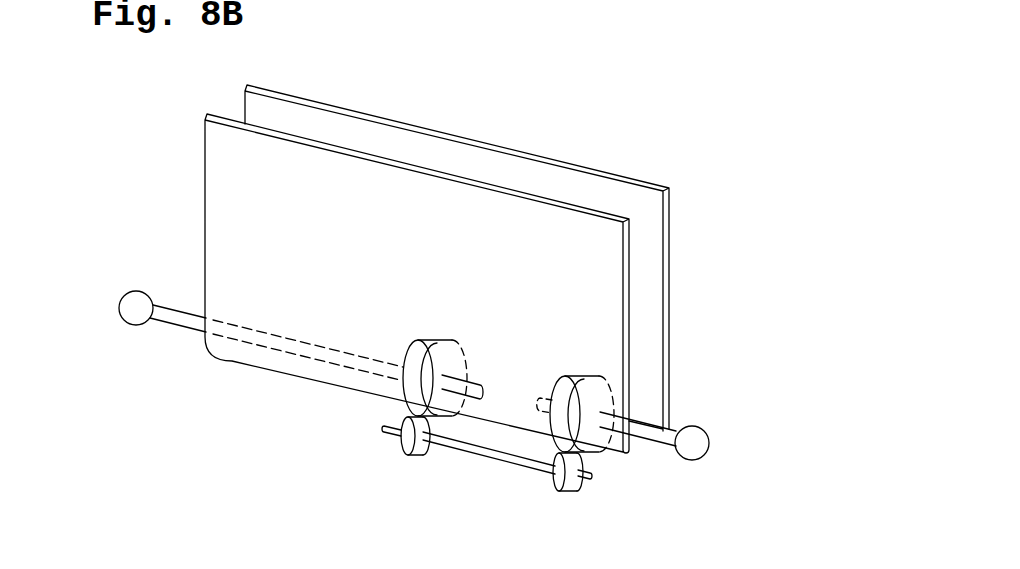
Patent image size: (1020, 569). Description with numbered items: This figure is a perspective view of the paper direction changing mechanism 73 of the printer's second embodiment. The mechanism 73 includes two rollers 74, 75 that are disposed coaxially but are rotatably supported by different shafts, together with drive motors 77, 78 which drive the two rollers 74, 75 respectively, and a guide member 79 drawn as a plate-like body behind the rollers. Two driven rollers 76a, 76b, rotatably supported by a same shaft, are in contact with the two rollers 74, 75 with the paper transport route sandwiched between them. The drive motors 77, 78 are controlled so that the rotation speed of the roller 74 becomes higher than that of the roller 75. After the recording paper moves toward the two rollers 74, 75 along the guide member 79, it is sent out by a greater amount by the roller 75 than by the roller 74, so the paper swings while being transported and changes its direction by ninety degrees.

The paper direction changing mechanism 73 is at (724, 271).
The roller 74 is at (403, 388).
The roller 75 is at (600, 452).
The driven roller 76a is at (412, 452).
The driven roller 76b is at (558, 485).
The drive motor 77 is at (123, 293).
The drive motor 78 is at (704, 431).
The guide member 79 is at (607, 305).